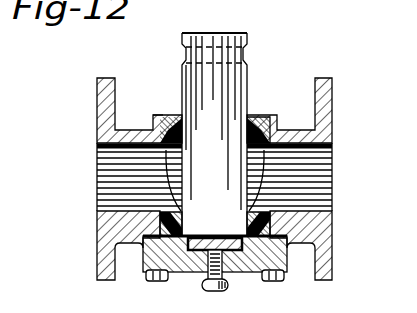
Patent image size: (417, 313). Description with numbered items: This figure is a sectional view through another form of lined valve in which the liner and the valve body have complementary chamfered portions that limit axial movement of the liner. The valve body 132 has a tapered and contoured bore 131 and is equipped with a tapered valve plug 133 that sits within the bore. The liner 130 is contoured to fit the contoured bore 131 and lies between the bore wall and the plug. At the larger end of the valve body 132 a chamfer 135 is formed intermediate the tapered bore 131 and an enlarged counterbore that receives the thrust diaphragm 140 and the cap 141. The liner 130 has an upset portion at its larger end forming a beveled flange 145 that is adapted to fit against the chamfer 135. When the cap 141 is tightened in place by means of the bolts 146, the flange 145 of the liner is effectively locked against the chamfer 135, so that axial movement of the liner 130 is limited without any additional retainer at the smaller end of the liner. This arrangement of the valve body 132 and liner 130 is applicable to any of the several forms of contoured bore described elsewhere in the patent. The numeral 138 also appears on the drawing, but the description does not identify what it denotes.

The liner 130 is at (258, 119).
The tapered and contoured bore 131 is at (280, 128).
The valve body 132 is at (110, 128).
The tapered valve plug 133 is at (193, 100).
The chamfer 135 is at (280, 225).
The screw 138 is at (248, 281).
The thrust diaphragm 140 is at (200, 252).
The cap 141 is at (145, 258).
The beveled flange 145 is at (175, 222).
The bolts 146 is at (272, 283).